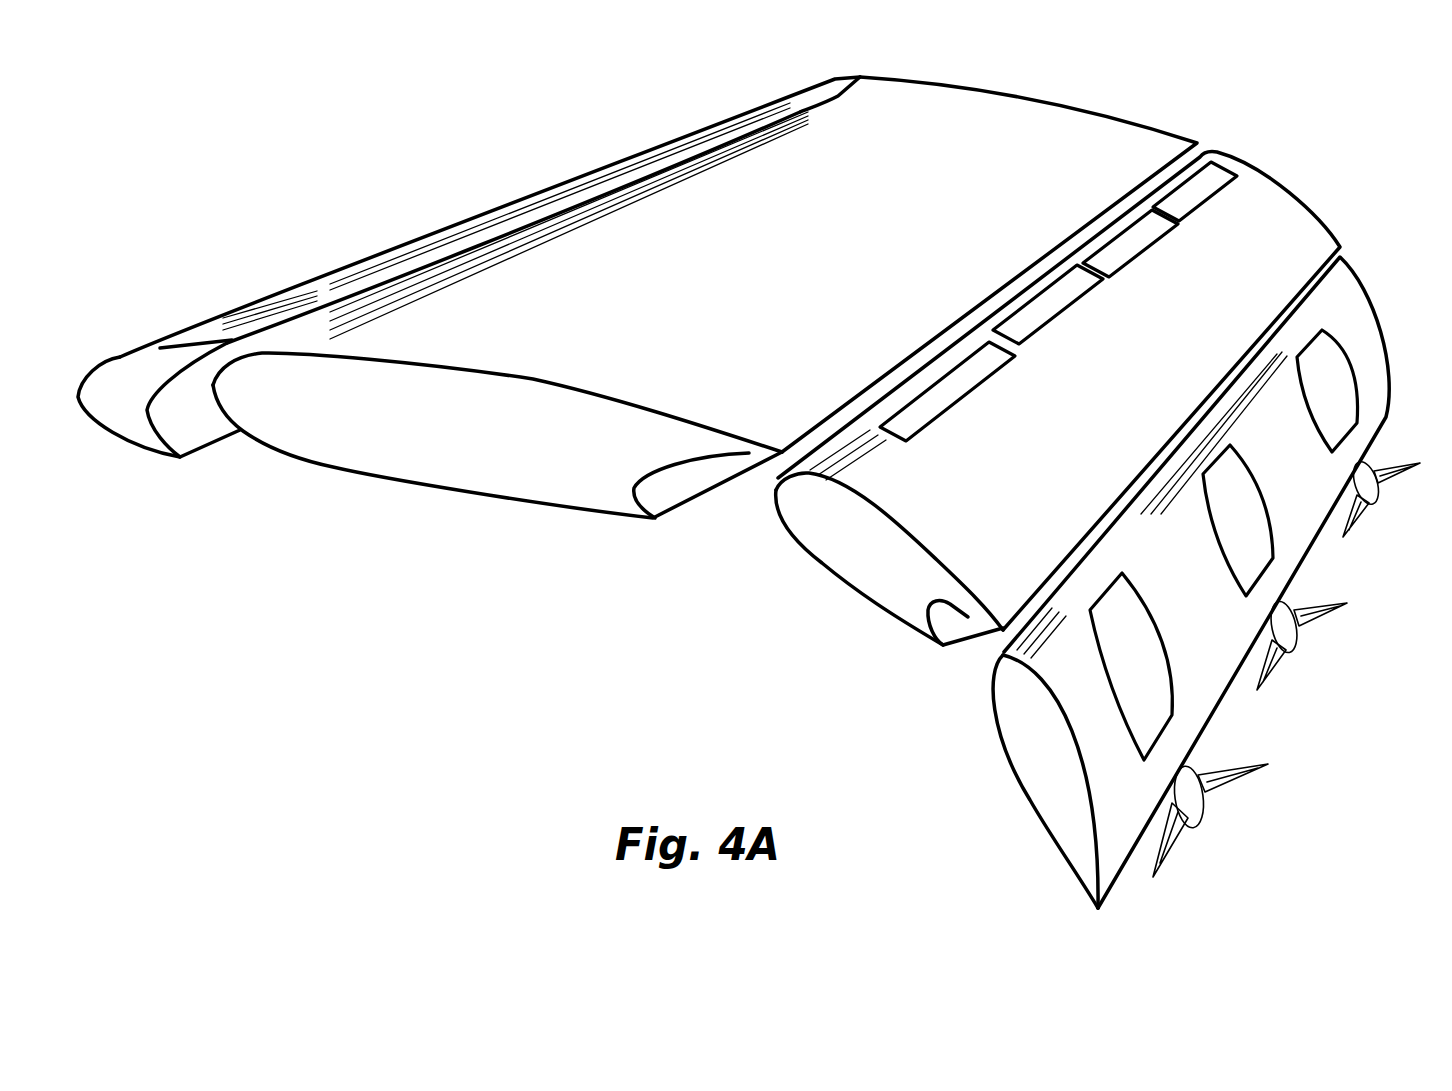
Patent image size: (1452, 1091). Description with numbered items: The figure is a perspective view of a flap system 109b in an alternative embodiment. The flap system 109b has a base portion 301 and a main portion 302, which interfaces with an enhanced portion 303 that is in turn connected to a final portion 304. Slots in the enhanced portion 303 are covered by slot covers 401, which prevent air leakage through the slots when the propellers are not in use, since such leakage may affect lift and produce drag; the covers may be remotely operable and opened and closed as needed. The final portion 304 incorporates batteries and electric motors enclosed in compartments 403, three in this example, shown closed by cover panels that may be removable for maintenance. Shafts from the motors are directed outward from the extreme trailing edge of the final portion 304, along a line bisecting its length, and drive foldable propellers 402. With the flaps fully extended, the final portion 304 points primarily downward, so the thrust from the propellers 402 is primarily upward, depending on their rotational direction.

The flap system 109b is at (253, 162).
The base portion 301 is at (110, 365).
The main portion 302 is at (443, 313).
The enhanced portion 303 is at (840, 547).
The final portion 304 is at (1022, 749).
The slot covers 401 is at (933, 407).
The foldable propellers 402 is at (1376, 494).
The compartments 403 is at (1330, 395).